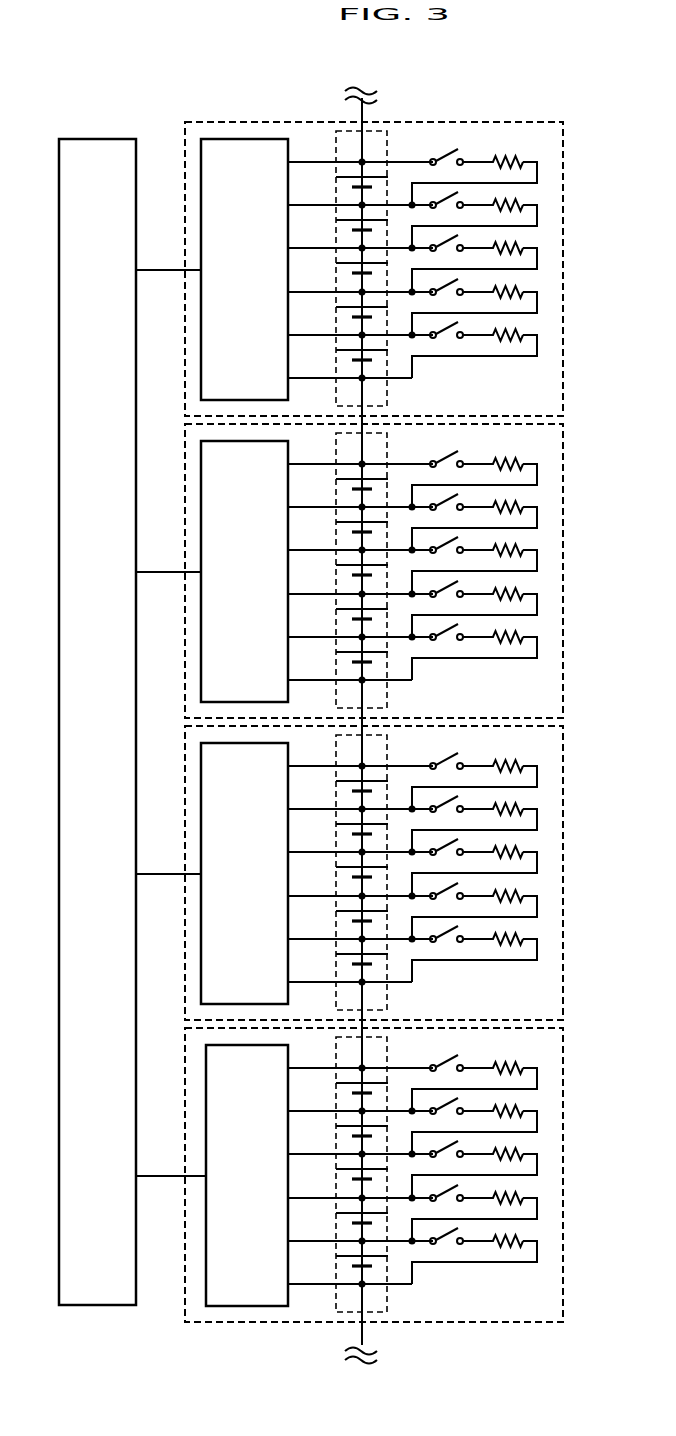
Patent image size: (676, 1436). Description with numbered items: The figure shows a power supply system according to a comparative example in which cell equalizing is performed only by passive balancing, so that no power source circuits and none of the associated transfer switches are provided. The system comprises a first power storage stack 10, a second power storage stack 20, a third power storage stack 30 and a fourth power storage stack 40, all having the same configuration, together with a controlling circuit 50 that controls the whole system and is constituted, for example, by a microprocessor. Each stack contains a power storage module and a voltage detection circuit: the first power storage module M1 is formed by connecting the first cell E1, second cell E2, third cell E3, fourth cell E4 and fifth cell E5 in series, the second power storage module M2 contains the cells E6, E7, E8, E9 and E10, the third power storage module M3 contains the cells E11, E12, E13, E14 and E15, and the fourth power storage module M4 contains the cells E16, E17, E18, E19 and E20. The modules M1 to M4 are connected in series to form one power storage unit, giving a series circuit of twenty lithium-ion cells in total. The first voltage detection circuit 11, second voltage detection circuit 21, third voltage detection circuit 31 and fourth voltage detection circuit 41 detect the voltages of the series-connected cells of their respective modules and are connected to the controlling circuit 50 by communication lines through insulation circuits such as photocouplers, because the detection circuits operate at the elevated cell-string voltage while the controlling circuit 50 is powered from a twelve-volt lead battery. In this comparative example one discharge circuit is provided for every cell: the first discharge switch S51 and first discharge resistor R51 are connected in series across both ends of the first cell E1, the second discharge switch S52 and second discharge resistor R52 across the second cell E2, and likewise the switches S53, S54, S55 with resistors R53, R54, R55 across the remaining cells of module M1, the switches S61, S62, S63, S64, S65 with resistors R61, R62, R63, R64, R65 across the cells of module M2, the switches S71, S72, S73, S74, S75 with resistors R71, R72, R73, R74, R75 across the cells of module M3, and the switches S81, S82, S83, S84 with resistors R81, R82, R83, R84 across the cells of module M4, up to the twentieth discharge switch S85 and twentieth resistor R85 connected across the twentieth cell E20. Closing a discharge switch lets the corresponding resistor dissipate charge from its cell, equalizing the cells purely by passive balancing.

The first power storage stack 10 is at (563, 161).
The second power storage stack 20 is at (563, 463).
The third power storage stack 30 is at (563, 765).
The fourth power storage stack 40 is at (563, 1067).
The first voltage detection circuit 11 is at (288, 153).
The second voltage detection circuit 21 is at (288, 455).
The third voltage detection circuit 31 is at (288, 757).
The fourth voltage detection circuit 41 is at (288, 1059).
The controlling circuit 50 is at (59, 175).
The first power storage module M1 is at (388, 153).
The second power storage module M2 is at (388, 455).
The third power storage module M3 is at (388, 757).
The fourth power storage module M4 is at (388, 1059).
The first cell E1 is at (350, 184).
The second cell E2 is at (350, 227).
The third cell E3 is at (350, 270).
The fourth cell E4 is at (350, 314).
The fifth cell E5 is at (350, 357).
The sixth cell E6 is at (350, 486).
The seventh cell E7 is at (350, 529).
The eighth cell E8 is at (350, 572).
The ninth cell E9 is at (350, 616).
The tenth cell E10 is at (345, 659).
The eleventh cell E11 is at (345, 788).
The twelfth cell E12 is at (345, 831).
The thirteenth cell E13 is at (345, 874).
The fourteenth cell E14 is at (345, 918).
The fifteenth cell E15 is at (345, 961).
The sixteenth cell E16 is at (345, 1090).
The seventeenth cell E17 is at (345, 1133).
The eighteenth cell E18 is at (345, 1176).
The nineteenth cell E19 is at (345, 1220).
The twentieth cell E20 is at (345, 1263).
The first discharge switch S51 is at (447, 167).
The second discharge switch S52 is at (447, 210).
The third discharge switch S53 is at (447, 253).
The fourth discharge switch S54 is at (447, 297).
The fifth discharge switch S55 is at (447, 340).
The sixth discharge switch S61 is at (447, 469).
The seventh discharge switch S62 is at (447, 512).
The eighth discharge switch S63 is at (447, 555).
The ninth discharge switch S64 is at (447, 599).
The tenth discharge switch S65 is at (447, 642).
The eleventh discharge switch S71 is at (447, 771).
The twelfth discharge switch S72 is at (447, 814).
The thirteenth discharge switch S73 is at (447, 857).
The fourteenth discharge switch S74 is at (447, 901).
The fifteenth discharge switch S75 is at (447, 944).
The sixteenth discharge switch S81 is at (447, 1073).
The seventeenth discharge switch S82 is at (447, 1116).
The eighteenth discharge switch S83 is at (447, 1159).
The nineteenth discharge switch S84 is at (447, 1203).
The twentieth discharge switch S85 is at (447, 1246).
The first discharge resistor R51 is at (493, 170).
The second discharge resistor R52 is at (493, 213).
The third discharge resistor R53 is at (493, 256).
The fourth discharge resistor R54 is at (493, 300).
The fifth discharge resistor R55 is at (493, 343).
The sixth discharge resistor R61 is at (493, 472).
The seventh discharge resistor R62 is at (493, 515).
The eighth discharge resistor R63 is at (493, 558).
The ninth discharge resistor R64 is at (493, 602).
The tenth discharge resistor R65 is at (493, 645).
The eleventh discharge resistor R71 is at (493, 774).
The twelfth discharge resistor R72 is at (493, 817).
The thirteenth discharge resistor R73 is at (493, 860).
The fourteenth discharge resistor R74 is at (493, 904).
The fifteenth discharge resistor R75 is at (493, 947).
The sixteenth discharge resistor R81 is at (493, 1076).
The seventeenth discharge resistor R82 is at (493, 1119).
The eighteenth discharge resistor R83 is at (493, 1162).
The nineteenth discharge resistor R84 is at (493, 1206).
The twentieth resistor R85 is at (493, 1249).